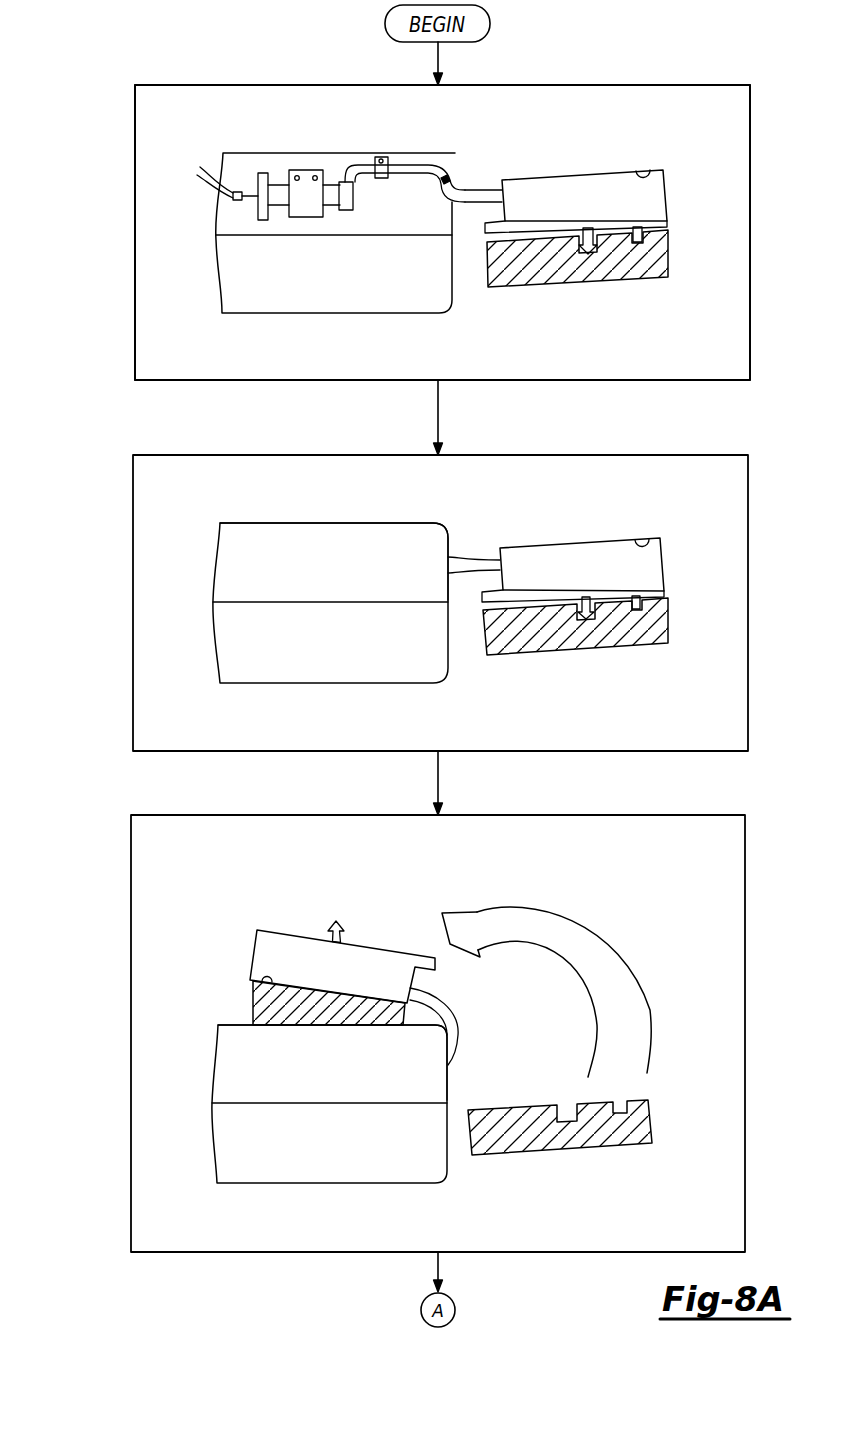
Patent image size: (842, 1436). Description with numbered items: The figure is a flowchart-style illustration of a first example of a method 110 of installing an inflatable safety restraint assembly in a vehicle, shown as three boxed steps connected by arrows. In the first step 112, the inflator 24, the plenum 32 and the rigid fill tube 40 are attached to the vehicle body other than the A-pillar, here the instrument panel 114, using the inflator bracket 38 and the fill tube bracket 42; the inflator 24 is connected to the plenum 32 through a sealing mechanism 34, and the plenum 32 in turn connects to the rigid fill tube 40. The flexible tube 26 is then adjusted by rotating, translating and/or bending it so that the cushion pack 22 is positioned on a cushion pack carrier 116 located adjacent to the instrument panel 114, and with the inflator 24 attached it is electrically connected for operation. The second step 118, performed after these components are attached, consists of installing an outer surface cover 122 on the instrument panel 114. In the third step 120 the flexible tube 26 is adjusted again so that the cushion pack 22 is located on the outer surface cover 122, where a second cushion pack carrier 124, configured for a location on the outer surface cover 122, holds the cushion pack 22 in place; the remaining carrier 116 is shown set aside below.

The method 110 is at (94, 86).
The first step 112 is at (135, 223).
The instrument panel 114 is at (203, 227).
The cushion pack carrier 116 is at (630, 270).
The second step 118 is at (133, 583).
The third step 120 is at (131, 1047).
The outer surface cover 122 is at (343, 540).
The second cushion pack carrier 124 is at (253, 1003).
The cushion pack 22 is at (630, 185).
The inflator 24 is at (277, 199).
The flexible tube 26 is at (465, 192).
The plenum 32 is at (345, 210).
The sealing mechanism 34 is at (333, 923).
The inflator bracket 38 is at (310, 205).
The rigid fill tube 40 is at (433, 162).
The fill tube bracket 42 is at (385, 180).